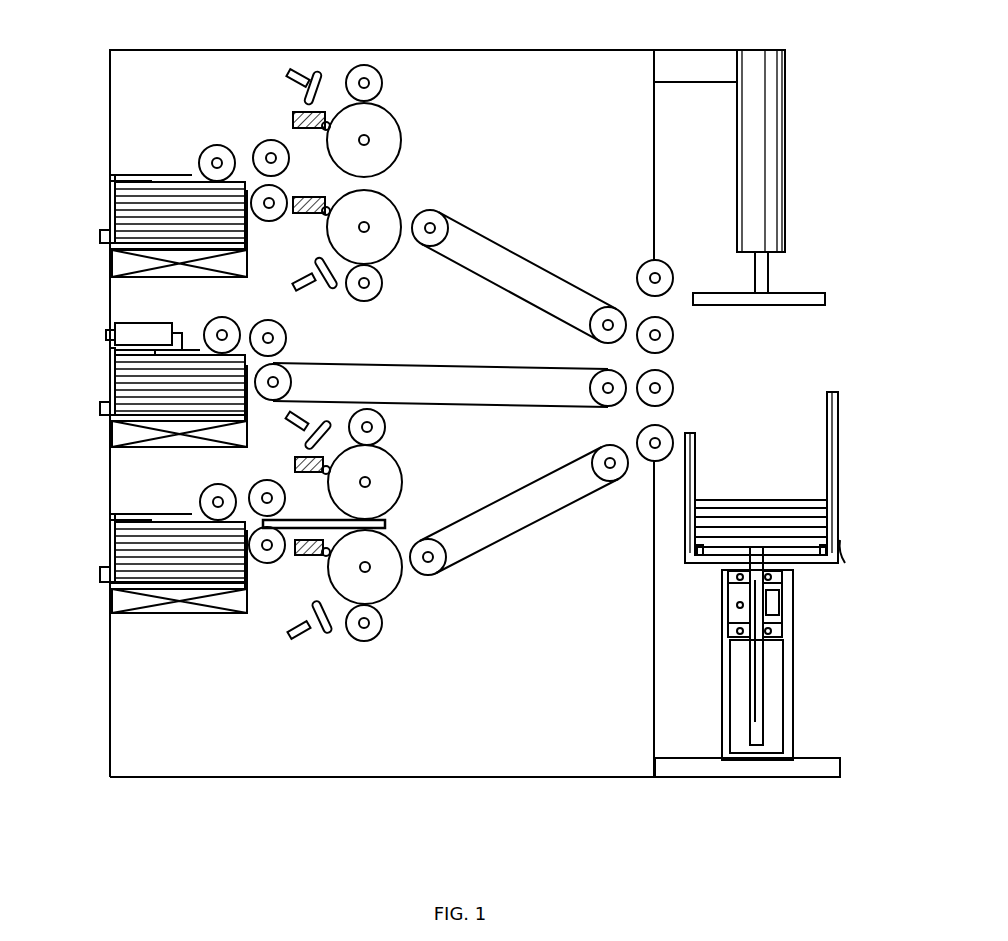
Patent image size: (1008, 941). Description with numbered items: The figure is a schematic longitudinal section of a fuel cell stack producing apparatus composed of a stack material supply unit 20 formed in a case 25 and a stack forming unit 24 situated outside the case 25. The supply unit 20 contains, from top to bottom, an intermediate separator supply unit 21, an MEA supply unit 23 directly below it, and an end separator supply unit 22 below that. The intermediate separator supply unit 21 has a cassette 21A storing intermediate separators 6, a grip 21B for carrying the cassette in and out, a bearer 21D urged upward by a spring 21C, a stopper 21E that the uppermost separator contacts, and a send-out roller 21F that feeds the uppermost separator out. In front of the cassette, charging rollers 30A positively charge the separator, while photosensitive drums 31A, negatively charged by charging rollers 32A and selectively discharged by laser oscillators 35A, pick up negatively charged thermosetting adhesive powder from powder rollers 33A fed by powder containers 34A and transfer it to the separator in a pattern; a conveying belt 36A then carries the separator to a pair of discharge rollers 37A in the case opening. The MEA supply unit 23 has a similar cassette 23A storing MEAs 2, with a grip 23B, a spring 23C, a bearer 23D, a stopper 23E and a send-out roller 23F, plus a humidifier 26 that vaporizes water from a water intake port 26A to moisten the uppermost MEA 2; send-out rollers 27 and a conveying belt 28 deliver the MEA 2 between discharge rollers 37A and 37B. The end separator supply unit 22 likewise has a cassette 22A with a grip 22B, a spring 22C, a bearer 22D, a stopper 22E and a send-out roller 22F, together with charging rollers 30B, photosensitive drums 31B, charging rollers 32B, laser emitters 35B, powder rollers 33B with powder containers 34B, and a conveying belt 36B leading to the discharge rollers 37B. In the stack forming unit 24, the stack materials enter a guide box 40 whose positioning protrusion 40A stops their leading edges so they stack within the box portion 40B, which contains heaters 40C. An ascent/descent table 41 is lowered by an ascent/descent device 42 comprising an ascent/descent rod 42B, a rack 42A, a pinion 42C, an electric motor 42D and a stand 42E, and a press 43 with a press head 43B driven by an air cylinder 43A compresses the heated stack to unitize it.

The stack material supply unit 20 is at (104, 79).
The case 25 is at (518, 50).
The stack forming unit 24 is at (797, 80).
The intermediate separator supply unit 21 is at (145, 194).
The cassette 21A is at (112, 186).
The grip 21B is at (100, 233).
The spring 21C is at (118, 267).
The bearer 21D is at (118, 247).
The stopper 21E is at (136, 175).
The send-out roller 21F is at (212, 148).
The intermediate separator 6 is at (158, 213).
The end separator supply unit 22 is at (146, 569).
The cassette 22A is at (113, 532).
The grip 22B is at (100, 572).
The spring 22C is at (120, 604).
The bearer 22D is at (118, 586).
The stopper 22E is at (125, 514).
The send-out roller 22F is at (203, 500).
The MEA supply unit 23 is at (145, 378).
The cassette 23A is at (112, 366).
The grip 23B is at (100, 407).
The spring 23C is at (122, 435).
The bearer 23D is at (118, 418).
The stopper 23E is at (128, 350).
The send-out roller 23F is at (222, 318).
The MEA 2 is at (162, 398).
The humidifier 26 is at (160, 335).
The water intake port 26A is at (106, 333).
The send-out rollers 27 is at (282, 336).
The conveying belt 28 is at (440, 368).
The charging rollers 30A is at (262, 140).
The photosensitive drums 31A is at (385, 128).
The charging rollers 32A is at (383, 80).
The powder rollers 33A is at (322, 128).
The powder containers 34A is at (302, 100).
The laser oscillators 35A is at (287, 73).
The conveying belt 36A is at (478, 228).
The charging rollers 30B is at (258, 490).
The photosensitive drums 31B is at (385, 475).
The charging rollers 32B is at (385, 426).
The powder rollers 33B is at (325, 476).
The powder containers 34B is at (312, 420).
The laser emitters 35B is at (294, 430).
The conveying belt 36B is at (500, 494).
The discharge rollers 37A is at (673, 280).
The discharge rollers 37B is at (673, 388).
The guide box 40 is at (766, 482).
The positioning protrusion 40A is at (826, 410).
The box portion 40B is at (826, 480).
The heaters 40C is at (700, 565).
The ascent/descent table 41 is at (845, 563).
The ascent/descent device 42 is at (770, 653).
The rack 42A is at (750, 660).
The ascent/descent rod 42B is at (758, 730).
The pinion 42C is at (738, 607).
The electric motor 42D is at (775, 605).
The stand 42E is at (795, 670).
The press 43 is at (772, 177).
The air cylinder 43A is at (790, 125).
The press head 43B is at (783, 297).